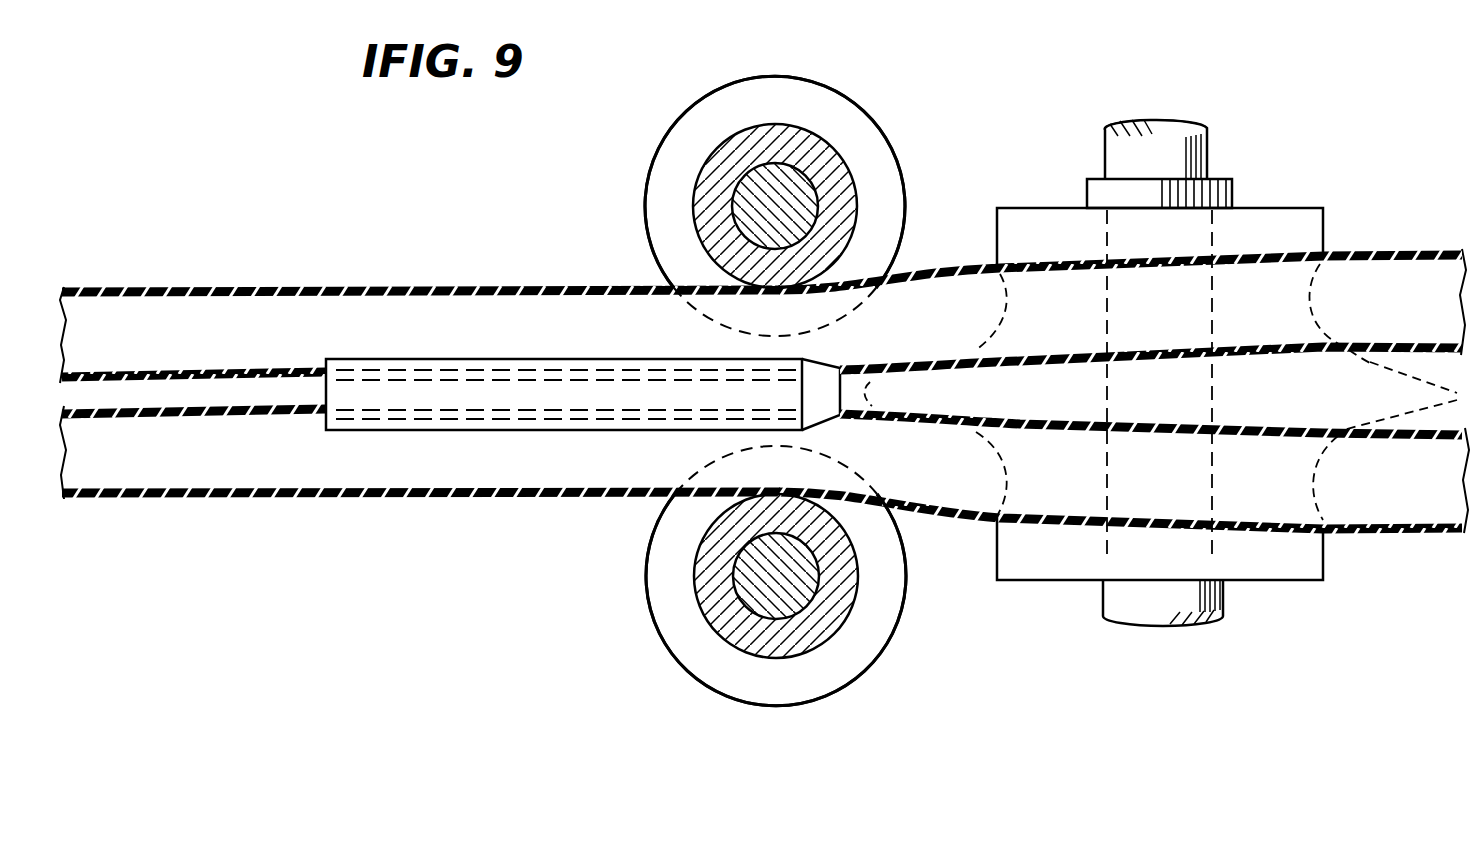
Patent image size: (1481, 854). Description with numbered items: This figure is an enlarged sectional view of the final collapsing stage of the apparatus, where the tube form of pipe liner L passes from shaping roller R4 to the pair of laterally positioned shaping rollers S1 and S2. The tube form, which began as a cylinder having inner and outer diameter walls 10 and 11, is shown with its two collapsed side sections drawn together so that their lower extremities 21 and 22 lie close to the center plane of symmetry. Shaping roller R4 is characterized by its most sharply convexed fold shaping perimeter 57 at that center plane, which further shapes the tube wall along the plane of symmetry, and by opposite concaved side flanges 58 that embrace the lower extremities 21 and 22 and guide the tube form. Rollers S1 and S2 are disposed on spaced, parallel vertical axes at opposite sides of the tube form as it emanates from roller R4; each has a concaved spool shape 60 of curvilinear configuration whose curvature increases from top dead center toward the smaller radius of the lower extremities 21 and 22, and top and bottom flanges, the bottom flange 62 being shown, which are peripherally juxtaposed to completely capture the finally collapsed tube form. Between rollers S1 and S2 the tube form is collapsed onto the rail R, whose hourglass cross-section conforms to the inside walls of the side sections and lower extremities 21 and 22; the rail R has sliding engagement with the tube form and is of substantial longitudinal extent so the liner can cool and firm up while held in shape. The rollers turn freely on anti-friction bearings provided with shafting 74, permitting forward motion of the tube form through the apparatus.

The lower extremity 21 is at (102, 322).
The lower extremity 22 is at (118, 467).
The inner diameter wall 10 is at (1342, 262).
The outer diameter wall 11 is at (1395, 253).
The fold shaping perimeter 57 is at (1124, 447).
The concaved side flanges 58 is at (1325, 272).
The concaved spool shape 60 is at (848, 167).
The bottom flange 62 is at (663, 226).
The shafting 74 is at (1200, 150).
The pipe liner L is at (206, 268).
The rail R is at (414, 350).
The shaping roller R4 is at (1060, 195).
The shaping roller S1 is at (640, 548).
The shaping roller S2 is at (640, 170).